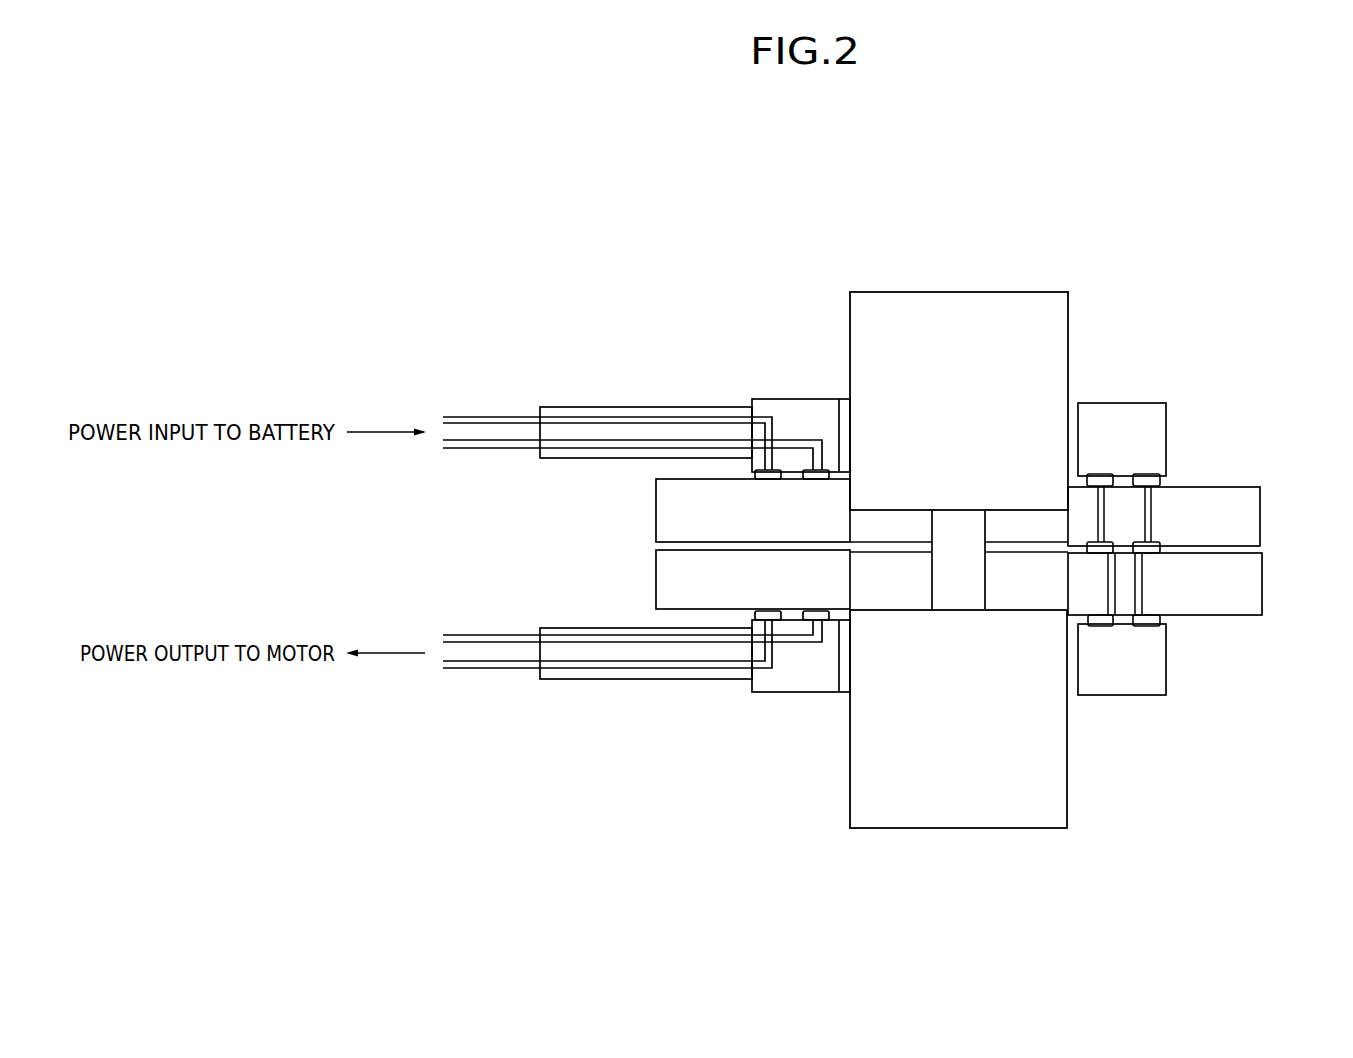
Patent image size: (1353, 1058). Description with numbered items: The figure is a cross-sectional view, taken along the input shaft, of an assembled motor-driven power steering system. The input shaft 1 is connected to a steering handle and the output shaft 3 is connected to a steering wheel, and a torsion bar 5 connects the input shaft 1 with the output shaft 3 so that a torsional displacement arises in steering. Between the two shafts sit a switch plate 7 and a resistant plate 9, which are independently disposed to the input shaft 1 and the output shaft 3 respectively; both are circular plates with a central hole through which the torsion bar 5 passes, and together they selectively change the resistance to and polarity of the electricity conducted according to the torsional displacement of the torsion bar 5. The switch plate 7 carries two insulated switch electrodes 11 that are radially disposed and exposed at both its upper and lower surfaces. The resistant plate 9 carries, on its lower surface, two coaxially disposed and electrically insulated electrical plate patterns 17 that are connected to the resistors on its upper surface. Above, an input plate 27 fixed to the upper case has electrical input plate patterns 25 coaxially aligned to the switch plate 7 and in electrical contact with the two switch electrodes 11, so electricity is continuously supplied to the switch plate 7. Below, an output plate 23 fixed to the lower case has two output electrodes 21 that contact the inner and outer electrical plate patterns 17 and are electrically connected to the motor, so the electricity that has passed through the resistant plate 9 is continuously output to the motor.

The input shaft 1 is at (1003, 305).
The output shaft 3 is at (965, 813).
The torsion bar 5 is at (970, 588).
The switch plate 7 is at (1238, 515).
The resistant plate 9 is at (1237, 590).
The switch electrodes 11 is at (1097, 512).
The electrical plate patterns 17 is at (1113, 590).
The output electrodes 21 is at (575, 640).
The output plate 23 is at (1137, 663).
The electrical input plate patterns 25 is at (1095, 473).
The input plate 27 is at (1155, 430).